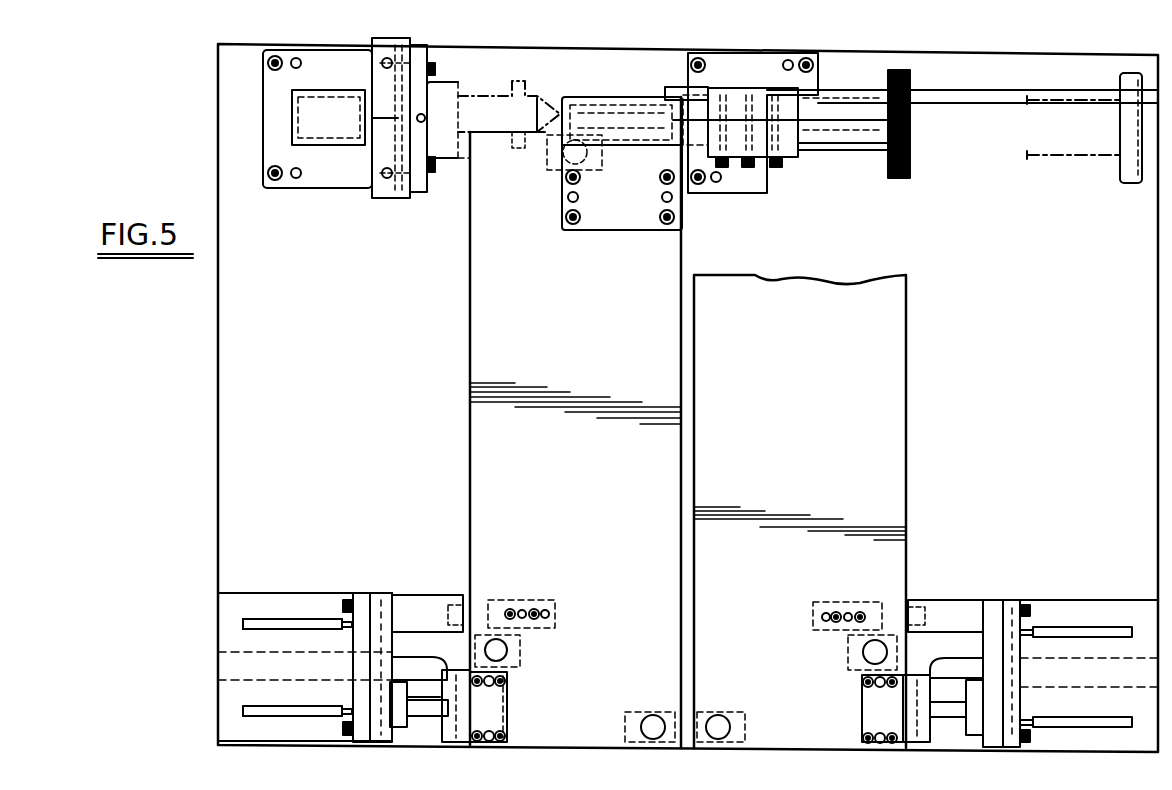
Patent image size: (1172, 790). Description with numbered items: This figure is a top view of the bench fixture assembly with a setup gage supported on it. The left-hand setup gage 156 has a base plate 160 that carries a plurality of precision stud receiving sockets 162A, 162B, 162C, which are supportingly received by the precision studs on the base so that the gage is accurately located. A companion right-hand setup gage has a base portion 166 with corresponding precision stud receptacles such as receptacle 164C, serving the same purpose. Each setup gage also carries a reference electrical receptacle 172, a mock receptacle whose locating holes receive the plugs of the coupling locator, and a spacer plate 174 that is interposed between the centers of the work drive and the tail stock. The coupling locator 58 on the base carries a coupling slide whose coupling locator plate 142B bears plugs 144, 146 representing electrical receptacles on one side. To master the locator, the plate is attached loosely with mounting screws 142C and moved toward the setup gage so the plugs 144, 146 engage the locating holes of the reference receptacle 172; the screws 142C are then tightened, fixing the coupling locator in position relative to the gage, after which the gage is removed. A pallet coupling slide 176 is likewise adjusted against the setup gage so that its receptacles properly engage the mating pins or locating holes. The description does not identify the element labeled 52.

The block 52 is at (448, 84).
The pallet coupling slide 176 is at (520, 80).
The spacer plate 174 is at (632, 100).
The precision stud receiving socket 162A is at (548, 170).
The base portion 166 is at (893, 404).
The left-hand setup gage 156 is at (461, 421).
The base plate 160 is at (477, 450).
The precision stud receiving socket 162C is at (495, 639).
The plug representing electrical receptacle 144 is at (398, 686).
The coupling locator plate 142B is at (372, 673).
The coupling locator mounting screw 142C is at (364, 726).
The coupling locator 58 is at (222, 701).
The reference electrical receptacle 172 is at (495, 700).
The plug representing electrical receptacle 146 is at (400, 727).
The precision stud receiving socket 162B is at (650, 712).
The precision stud receptacle 164C is at (718, 713).